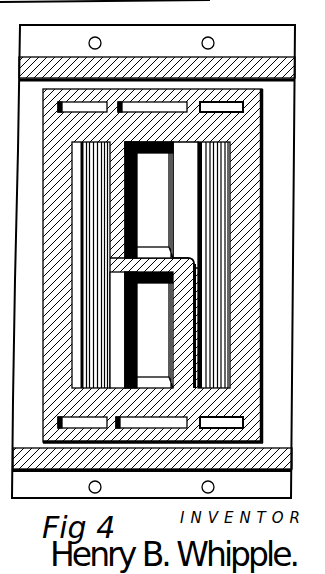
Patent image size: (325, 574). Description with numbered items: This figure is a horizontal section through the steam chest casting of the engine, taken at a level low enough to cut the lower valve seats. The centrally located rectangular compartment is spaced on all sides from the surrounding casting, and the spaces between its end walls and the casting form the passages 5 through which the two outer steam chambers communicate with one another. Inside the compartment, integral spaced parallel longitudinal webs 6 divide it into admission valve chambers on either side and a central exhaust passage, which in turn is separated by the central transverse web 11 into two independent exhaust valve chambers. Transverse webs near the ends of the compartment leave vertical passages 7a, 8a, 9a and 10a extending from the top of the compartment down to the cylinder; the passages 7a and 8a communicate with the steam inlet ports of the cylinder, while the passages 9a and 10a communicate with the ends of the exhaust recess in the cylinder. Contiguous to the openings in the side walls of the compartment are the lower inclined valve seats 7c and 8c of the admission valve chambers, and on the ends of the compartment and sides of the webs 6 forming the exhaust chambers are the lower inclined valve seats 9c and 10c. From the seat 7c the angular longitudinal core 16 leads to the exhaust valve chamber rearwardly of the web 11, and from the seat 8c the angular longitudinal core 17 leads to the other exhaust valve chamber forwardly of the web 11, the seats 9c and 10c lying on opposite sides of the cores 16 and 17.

The passages 5 is at (148, 88).
The longitudinal webs 6 is at (133, 184).
The vertical passage 7a is at (243, 107).
The lower inclined valve seat 7c is at (228, 192).
The vertical passage 8a is at (60, 107).
The lower inclined valve seat 8c is at (80, 192).
The vertical passage 9a is at (125, 101).
The lower inclined valve seat 9c is at (171, 209).
The vertical passage 10a is at (127, 429).
The lower inclined valve seat 10c is at (172, 345).
The central transverse web 11 is at (150, 279).
The angular longitudinal core 16 is at (185, 205).
The angular longitudinal core 17 is at (115, 330).